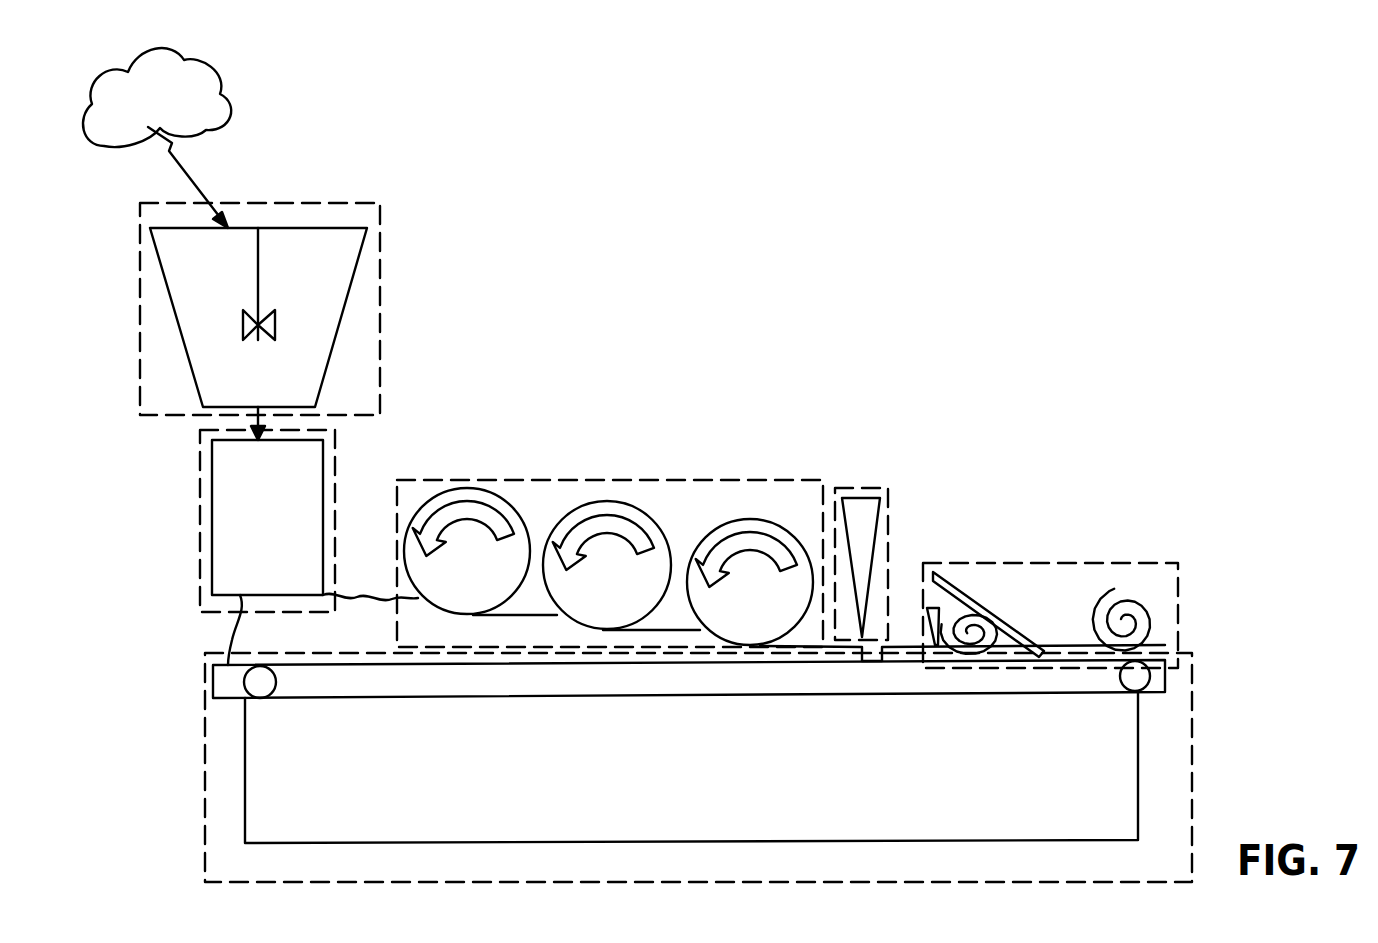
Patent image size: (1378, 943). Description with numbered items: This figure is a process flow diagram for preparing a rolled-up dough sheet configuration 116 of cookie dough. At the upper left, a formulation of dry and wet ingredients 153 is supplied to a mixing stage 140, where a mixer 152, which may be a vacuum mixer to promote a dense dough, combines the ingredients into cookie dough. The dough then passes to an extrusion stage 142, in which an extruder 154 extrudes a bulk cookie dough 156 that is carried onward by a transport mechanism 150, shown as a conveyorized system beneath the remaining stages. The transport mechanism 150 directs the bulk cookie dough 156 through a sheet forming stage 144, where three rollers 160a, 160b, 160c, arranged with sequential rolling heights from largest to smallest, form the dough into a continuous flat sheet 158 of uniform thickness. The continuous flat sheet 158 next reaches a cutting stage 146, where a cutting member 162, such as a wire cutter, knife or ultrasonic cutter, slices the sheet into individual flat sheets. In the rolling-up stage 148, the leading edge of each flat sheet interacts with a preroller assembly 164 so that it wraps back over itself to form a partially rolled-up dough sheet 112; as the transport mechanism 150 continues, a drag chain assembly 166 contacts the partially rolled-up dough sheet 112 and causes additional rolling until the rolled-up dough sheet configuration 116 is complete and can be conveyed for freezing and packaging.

The dry and wet ingredients 153 is at (157, 97).
The mixing stage 140 is at (382, 270).
The mixer 152 is at (340, 325).
The extrusion stage 142 is at (337, 465).
The extruder 154 is at (212, 523).
The bulk cookie dough 156 is at (275, 625).
The sheet forming stage 144 is at (620, 480).
The roller 160a is at (443, 582).
The roller 160b is at (583, 597).
The roller 160c is at (730, 614).
The cutting stage 146 is at (872, 488).
The cutting member 162 is at (880, 527).
The continuous flat sheet 158 is at (797, 648).
The rolling-up stage 148 is at (1025, 563).
The preroller assembly 164 is at (927, 612).
The drag chain assembly 166 is at (975, 595).
The rolled-up dough sheet configuration 116 is at (1143, 590).
The transport mechanism 150 is at (205, 765).
The partially rolled-up dough sheet 112 is at (958, 655).